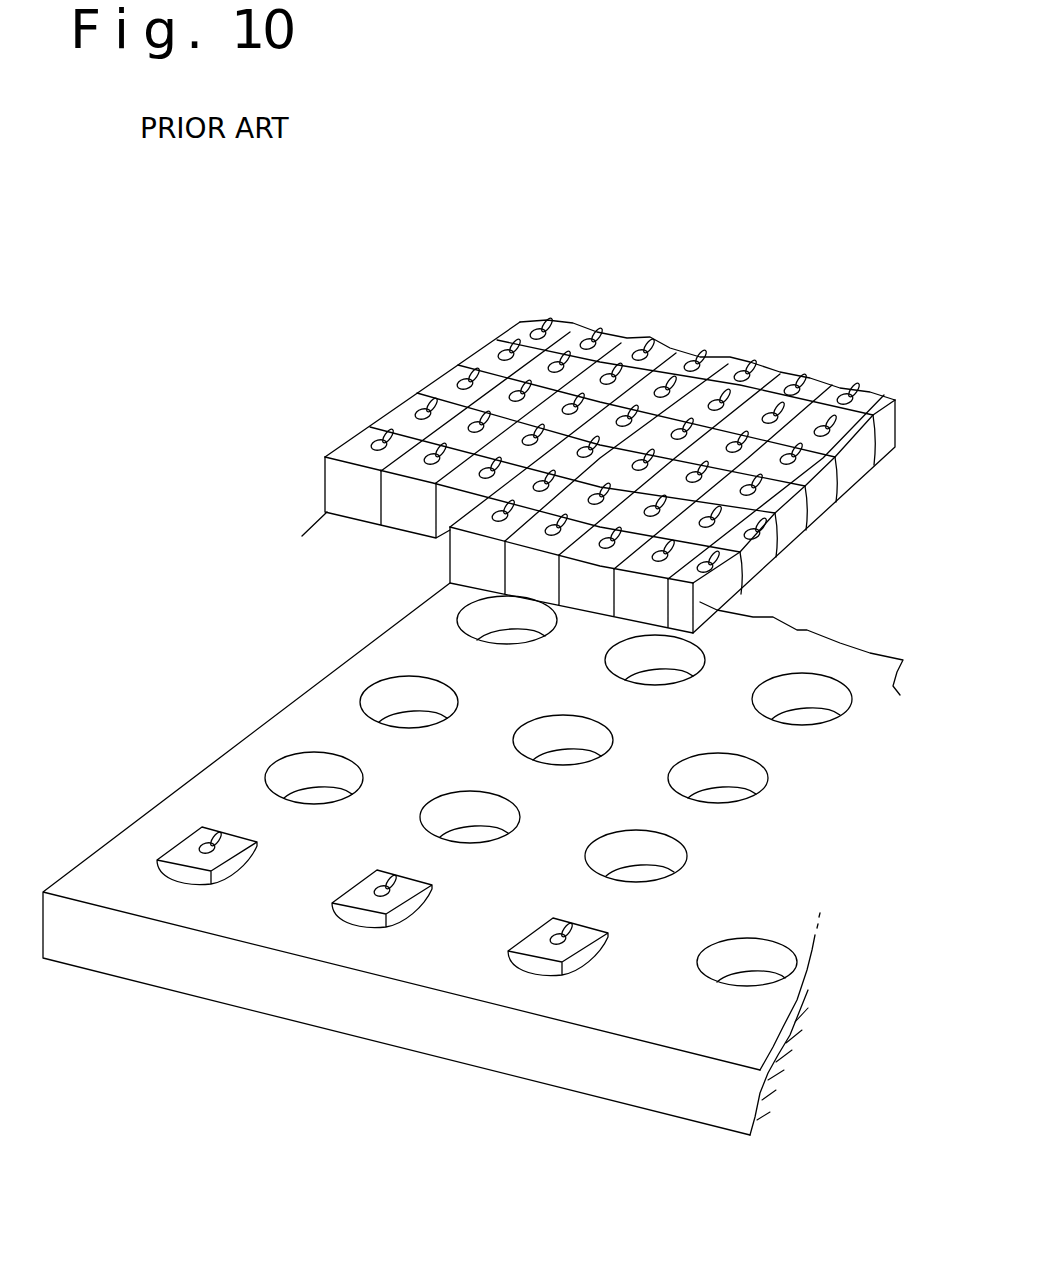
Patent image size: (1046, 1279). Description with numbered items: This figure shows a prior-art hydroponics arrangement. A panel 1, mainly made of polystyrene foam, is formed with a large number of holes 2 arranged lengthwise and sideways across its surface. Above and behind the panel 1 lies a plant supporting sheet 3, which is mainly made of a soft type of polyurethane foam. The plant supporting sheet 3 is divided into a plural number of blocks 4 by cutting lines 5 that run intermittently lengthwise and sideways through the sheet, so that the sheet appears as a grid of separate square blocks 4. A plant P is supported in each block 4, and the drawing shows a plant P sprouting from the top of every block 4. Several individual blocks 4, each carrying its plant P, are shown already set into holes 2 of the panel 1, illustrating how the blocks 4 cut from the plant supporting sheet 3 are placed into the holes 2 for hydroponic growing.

The panel 1 is at (277, 737).
The holes 2 is at (385, 693).
The plant supporting sheet 3 is at (436, 386).
The blocks 4 is at (343, 500).
The cutting lines 5 is at (595, 355).
The plant P is at (532, 322).